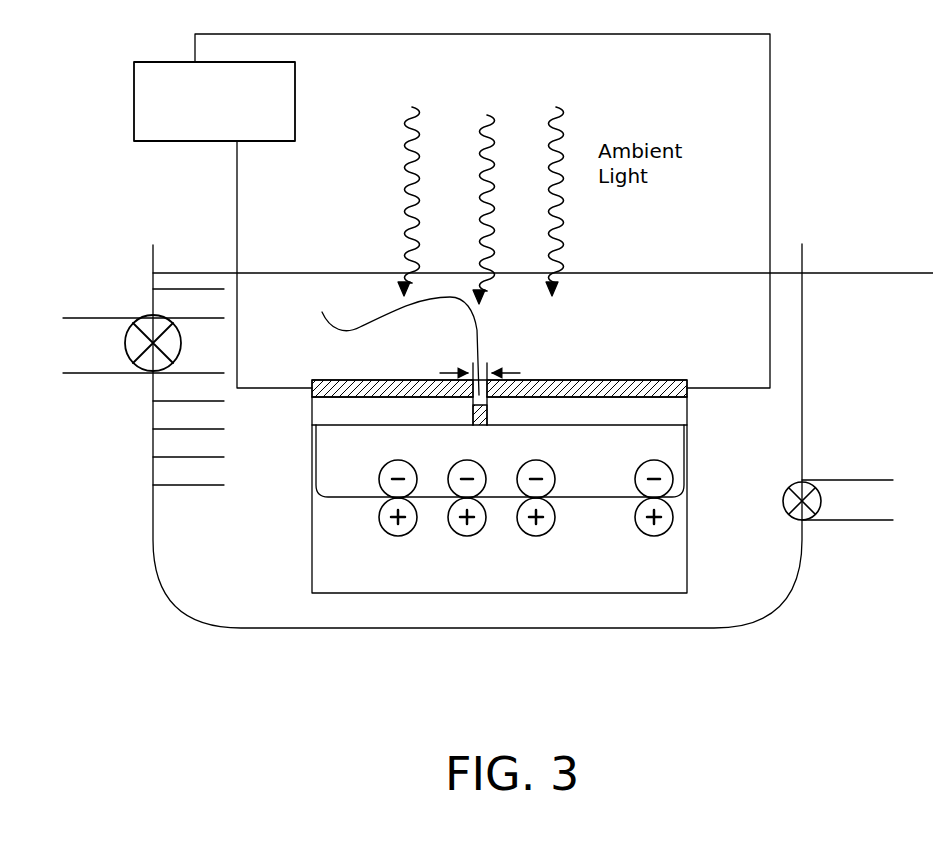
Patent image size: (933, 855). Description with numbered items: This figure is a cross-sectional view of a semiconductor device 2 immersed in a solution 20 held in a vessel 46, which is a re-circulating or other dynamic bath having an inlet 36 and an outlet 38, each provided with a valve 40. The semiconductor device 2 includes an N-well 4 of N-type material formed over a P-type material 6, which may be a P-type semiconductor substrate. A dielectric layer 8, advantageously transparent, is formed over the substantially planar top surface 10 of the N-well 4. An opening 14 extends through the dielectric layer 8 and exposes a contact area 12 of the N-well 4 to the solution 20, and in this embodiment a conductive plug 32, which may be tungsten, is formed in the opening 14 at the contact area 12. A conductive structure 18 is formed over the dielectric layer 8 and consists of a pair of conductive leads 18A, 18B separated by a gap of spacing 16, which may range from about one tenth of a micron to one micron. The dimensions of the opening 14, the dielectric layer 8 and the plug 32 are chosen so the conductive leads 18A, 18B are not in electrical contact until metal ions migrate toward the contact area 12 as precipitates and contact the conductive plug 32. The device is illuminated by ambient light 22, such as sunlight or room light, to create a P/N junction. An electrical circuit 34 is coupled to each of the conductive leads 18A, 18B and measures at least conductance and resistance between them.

The semiconductor device 2 is at (700, 463).
The N-well 4 is at (610, 488).
The P-type material 6 is at (610, 594).
The dielectric layer 8 is at (375, 424).
The top surface 10 is at (332, 426).
The contact area 12 is at (480, 425).
The opening 14 is at (395, 339).
The spacing 16 is at (520, 373).
The conductive structure 18 is at (648, 388).
The conductive lead 18A is at (353, 388).
The conductive lead 18B is at (577, 388).
The solution 20 is at (740, 314).
The ambient light 22 is at (408, 198).
The conductive plug 32 is at (475, 408).
The electrical circuit 34 is at (134, 96).
The inlet 36 is at (123, 327).
The outlet 38 is at (848, 512).
The valve 40 is at (125, 347).
The vessel 46 is at (805, 352).